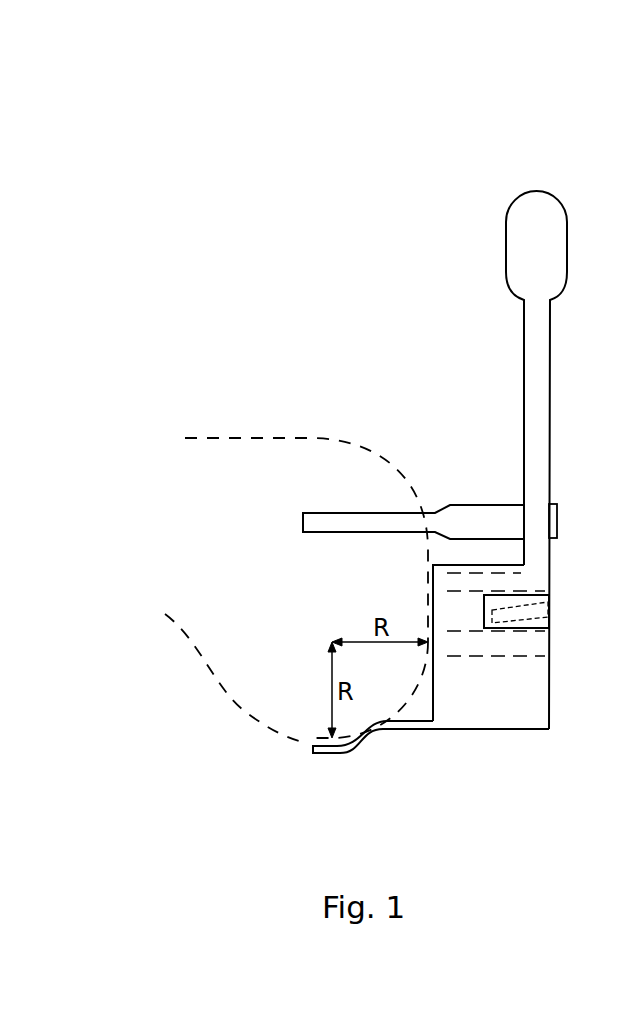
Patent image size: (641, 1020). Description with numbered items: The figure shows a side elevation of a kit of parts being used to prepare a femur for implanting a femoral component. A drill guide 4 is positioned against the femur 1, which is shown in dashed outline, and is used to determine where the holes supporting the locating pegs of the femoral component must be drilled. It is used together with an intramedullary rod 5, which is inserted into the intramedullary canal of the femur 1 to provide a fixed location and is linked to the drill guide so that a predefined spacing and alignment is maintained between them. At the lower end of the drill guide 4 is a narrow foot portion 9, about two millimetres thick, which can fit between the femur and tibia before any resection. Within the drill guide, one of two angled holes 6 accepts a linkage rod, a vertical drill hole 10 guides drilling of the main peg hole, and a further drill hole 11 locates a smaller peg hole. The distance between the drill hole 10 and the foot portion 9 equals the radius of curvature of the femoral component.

The femur 1 is at (255, 437).
The drill guide 4 is at (549, 392).
The intramedullary rod 5 is at (460, 505).
The holes 6 is at (525, 612).
The foot portion 9 is at (352, 753).
The drill hole 10 is at (517, 656).
The further drill hole 11 is at (536, 573).